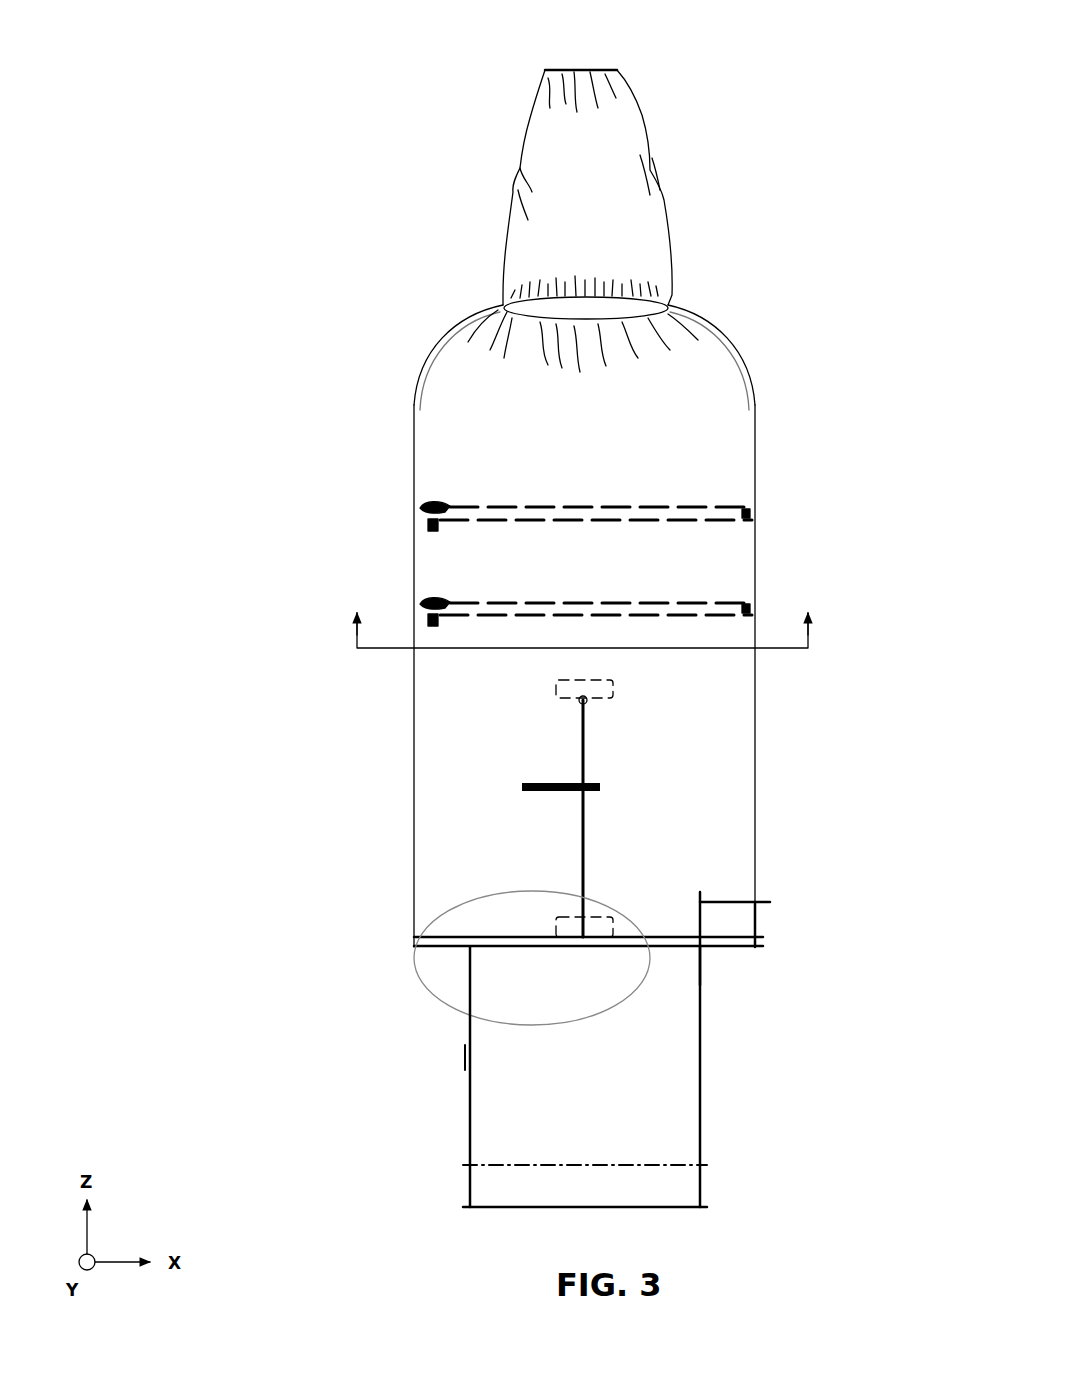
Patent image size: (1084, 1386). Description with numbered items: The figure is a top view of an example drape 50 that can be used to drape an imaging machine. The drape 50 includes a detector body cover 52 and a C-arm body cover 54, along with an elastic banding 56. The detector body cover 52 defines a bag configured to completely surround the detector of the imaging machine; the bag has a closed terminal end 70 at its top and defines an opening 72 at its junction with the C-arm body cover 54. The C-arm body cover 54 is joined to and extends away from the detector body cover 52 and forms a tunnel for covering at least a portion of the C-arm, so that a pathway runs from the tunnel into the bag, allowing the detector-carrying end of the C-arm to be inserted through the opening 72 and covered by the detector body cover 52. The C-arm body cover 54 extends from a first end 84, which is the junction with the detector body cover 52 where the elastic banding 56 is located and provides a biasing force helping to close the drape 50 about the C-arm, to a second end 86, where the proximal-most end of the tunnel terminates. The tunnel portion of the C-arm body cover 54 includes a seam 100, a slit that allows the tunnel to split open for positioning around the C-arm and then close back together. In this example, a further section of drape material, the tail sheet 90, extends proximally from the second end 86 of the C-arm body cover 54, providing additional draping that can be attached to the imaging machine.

The drape 50 is at (835, 142).
The detector body cover 52 is at (705, 202).
The C-arm body cover 54 is at (803, 568).
The elastic banding 56 is at (670, 310).
The closed terminal end 70 is at (582, 66).
The opening 72 is at (560, 348).
The first end 84 is at (500, 312).
The second end 86 is at (440, 947).
The tail sheet 90 is at (742, 1097).
The seam 100 is at (586, 872).